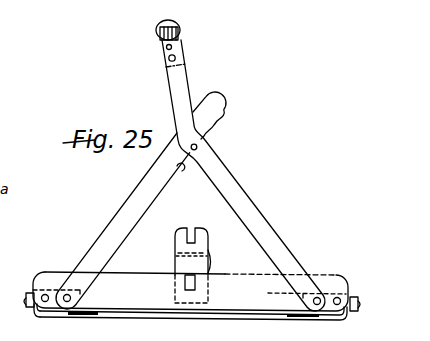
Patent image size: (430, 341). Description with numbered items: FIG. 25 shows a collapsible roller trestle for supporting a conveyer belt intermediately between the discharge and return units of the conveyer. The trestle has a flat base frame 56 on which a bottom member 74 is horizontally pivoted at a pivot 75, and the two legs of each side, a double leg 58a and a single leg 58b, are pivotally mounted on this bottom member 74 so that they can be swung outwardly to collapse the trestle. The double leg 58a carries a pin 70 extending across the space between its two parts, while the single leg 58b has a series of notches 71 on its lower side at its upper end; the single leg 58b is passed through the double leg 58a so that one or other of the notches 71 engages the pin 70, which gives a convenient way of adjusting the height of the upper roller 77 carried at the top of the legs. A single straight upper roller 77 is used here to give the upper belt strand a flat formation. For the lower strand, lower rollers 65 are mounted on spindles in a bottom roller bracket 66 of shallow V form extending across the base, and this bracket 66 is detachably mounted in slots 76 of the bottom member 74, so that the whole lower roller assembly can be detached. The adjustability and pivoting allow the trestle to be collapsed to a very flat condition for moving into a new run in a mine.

The base frame 56 is at (222, 319).
The double leg 58a is at (269, 228).
The single leg 58b is at (134, 198).
The lower rollers 65 is at (209, 252).
The bottom roller bracket 66 is at (175, 258).
The pin 70 is at (197, 147).
The notches 71 is at (182, 171).
The bottom member 74 is at (190, 291).
The pivot 75 is at (31, 293).
The slots 76 is at (175, 287).
The upper roller 77 is at (180, 30).